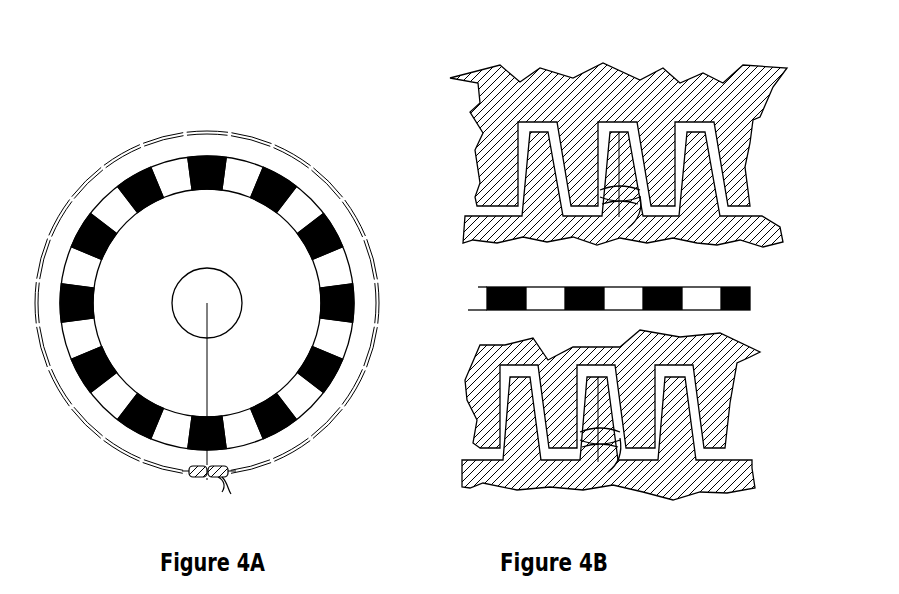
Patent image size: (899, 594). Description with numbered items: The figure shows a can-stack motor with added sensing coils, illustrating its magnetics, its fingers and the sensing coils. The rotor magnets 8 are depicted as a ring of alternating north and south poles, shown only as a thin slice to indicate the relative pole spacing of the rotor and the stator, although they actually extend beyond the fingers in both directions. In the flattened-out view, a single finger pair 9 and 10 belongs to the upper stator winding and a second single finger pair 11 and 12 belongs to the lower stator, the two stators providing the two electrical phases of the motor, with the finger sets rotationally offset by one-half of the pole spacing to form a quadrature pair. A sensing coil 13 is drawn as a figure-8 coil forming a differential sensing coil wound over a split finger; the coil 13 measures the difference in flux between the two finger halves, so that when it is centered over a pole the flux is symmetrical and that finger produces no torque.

In FIG. 4A, the rotor magnets 8 is at (145, 170).
In FIG. 4B, the rotor magnets 8 is at (755, 295).
In FIG. 4B, the upper stator finger 9 is at (480, 138).
In FIG. 4B, the upper stator finger 10 is at (465, 217).
In FIG. 4B, the lower stator finger 11 is at (742, 375).
In FIG. 4B, the lower stator finger 12 is at (757, 468).
In FIG. 4A, the sensing coil 13 is at (193, 484).
In FIG. 4B, the sensing coil 13 is at (628, 472).